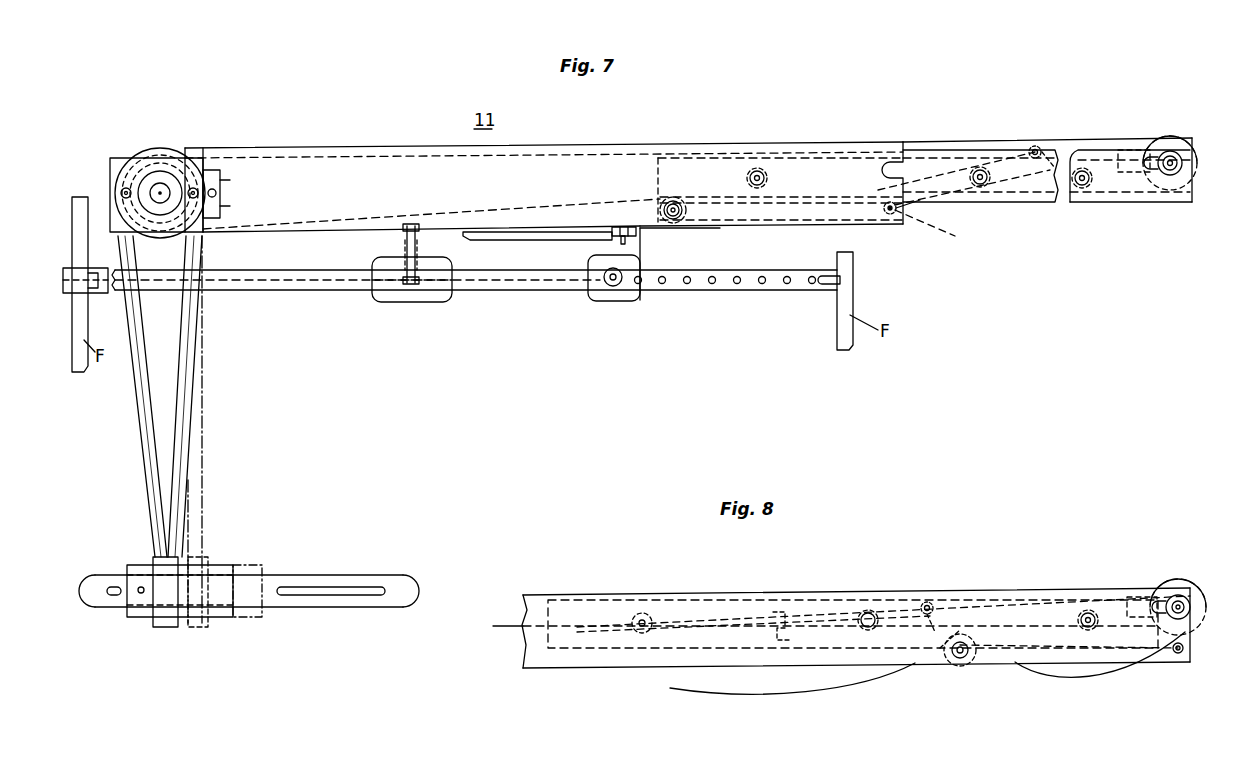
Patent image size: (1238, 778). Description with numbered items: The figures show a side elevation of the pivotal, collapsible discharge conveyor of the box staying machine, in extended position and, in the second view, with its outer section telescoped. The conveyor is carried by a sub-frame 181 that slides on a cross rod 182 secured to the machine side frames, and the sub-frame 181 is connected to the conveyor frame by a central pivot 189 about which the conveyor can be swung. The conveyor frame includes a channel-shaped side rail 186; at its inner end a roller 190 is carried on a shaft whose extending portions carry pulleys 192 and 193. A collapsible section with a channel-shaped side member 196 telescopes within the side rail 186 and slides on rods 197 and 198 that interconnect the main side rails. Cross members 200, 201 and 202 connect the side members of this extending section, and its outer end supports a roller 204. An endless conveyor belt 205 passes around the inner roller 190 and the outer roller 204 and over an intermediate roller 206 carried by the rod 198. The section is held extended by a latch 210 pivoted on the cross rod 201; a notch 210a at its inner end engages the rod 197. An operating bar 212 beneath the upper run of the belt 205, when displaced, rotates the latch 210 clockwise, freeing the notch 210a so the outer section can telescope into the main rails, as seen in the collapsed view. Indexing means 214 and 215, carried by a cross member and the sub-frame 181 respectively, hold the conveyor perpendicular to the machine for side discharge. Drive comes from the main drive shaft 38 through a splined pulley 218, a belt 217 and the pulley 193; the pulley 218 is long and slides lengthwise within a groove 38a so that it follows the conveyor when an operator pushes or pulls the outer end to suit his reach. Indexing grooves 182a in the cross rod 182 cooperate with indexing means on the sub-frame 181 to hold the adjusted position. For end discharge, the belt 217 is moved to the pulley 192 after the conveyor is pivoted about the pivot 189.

In FIG. 7, the main drive shaft 38 is at (100, 600).
In FIG. 7, the groove 38a is at (282, 593).
In FIG. 7, the sub-frame 181 is at (413, 300).
In FIG. 7, the cross rod 182 is at (268, 288).
In FIG. 7, the indexing grooves 182a is at (740, 282).
In FIG. 7, the side rail 186 is at (548, 163).
In FIG. 7, the central pivot 189 is at (412, 224).
In FIG. 7, the roller 190 is at (165, 150).
In FIG. 7, the pulley 192 is at (195, 150).
In FIG. 7, the pulley 193 is at (150, 185).
In FIG. 7, the side member 196 is at (1044, 185).
In FIG. 8, the side member 196 is at (597, 635).
In FIG. 7, the rod 197 is at (890, 215).
In FIG. 7, the rod 198 is at (670, 218).
In FIG. 7, the cross member 200 is at (760, 172).
In FIG. 8, the cross member 200 is at (645, 618).
In FIG. 7, the cross member 201 is at (976, 170).
In FIG. 8, the cross member 201 is at (870, 628).
In FIG. 7, the cross member 202 is at (1083, 186).
In FIG. 8, the cross member 202 is at (1085, 614).
In FIG. 7, the roller 204 is at (1172, 136).
In FIG. 8, the roller 204 is at (1178, 580).
In FIG. 7, the endless conveyor belt 205 is at (1097, 141).
In FIG. 8, the endless conveyor belt 205 is at (498, 623).
In FIG. 7, the intermediate roller 206 is at (688, 216).
In FIG. 8, the intermediate roller 206 is at (965, 655).
In FIG. 7, the latch 210 is at (1010, 165).
In FIG. 8, the latch 210 is at (870, 606).
In FIG. 7, the notch 210a is at (905, 213).
In FIG. 8, the notch 210a is at (775, 645).
In FIG. 7, the operating bar 212 is at (1038, 147).
In FIG. 8, the operating bar 212 is at (929, 602).
In FIG. 7, the indexing means 214 is at (620, 226).
In FIG. 7, the indexing means 215 is at (608, 240).
In FIG. 7, the belt 217 is at (145, 445).
In FIG. 7, the splined pulley 218 is at (145, 570).